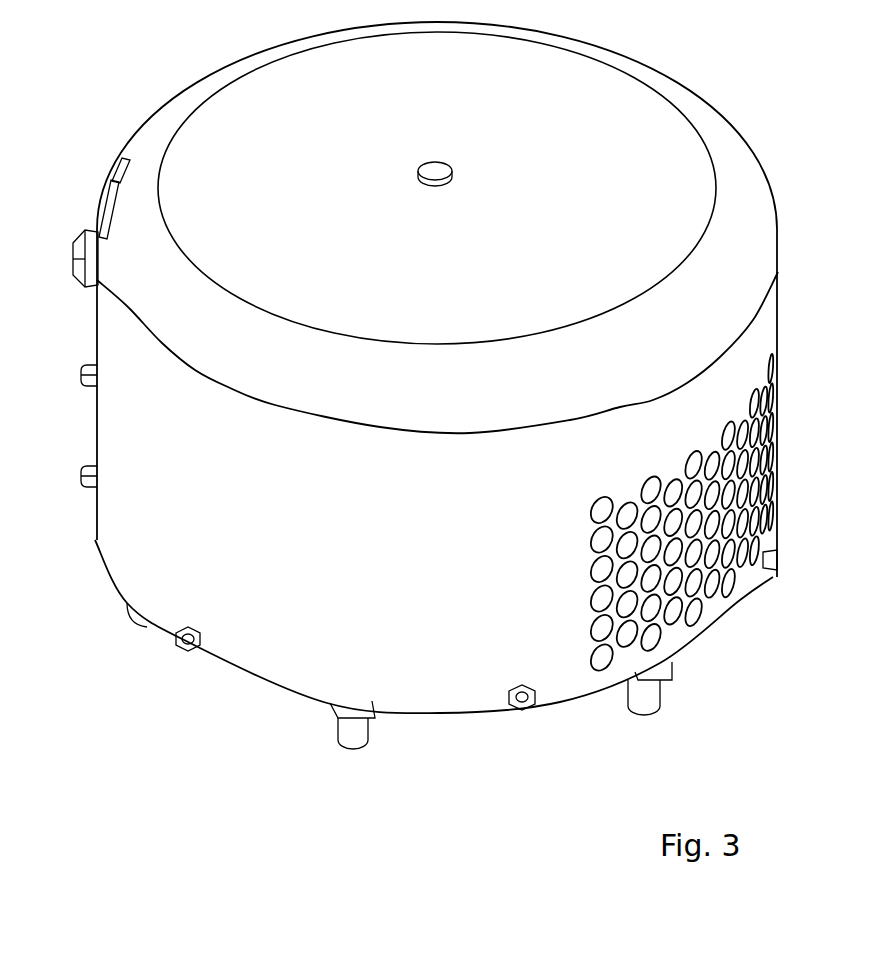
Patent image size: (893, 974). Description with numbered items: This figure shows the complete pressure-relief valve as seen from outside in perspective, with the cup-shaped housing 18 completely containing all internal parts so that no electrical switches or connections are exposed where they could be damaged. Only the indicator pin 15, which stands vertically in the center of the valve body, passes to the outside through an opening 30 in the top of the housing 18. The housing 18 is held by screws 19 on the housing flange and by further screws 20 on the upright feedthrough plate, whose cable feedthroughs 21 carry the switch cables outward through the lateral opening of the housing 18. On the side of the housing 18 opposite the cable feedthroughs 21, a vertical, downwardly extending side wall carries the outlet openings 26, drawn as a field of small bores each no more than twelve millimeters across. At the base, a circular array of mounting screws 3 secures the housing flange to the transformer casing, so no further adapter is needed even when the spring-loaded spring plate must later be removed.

The mounting screws 3 is at (355, 732).
The indicator pin 15 is at (452, 165).
The cup-shaped housing 18 is at (739, 360).
The screws 19 is at (178, 646).
The further screws 20 is at (88, 383).
The cable feedthroughs 21 is at (110, 190).
The outlet openings 26 is at (777, 422).
The opening 30 is at (454, 181).